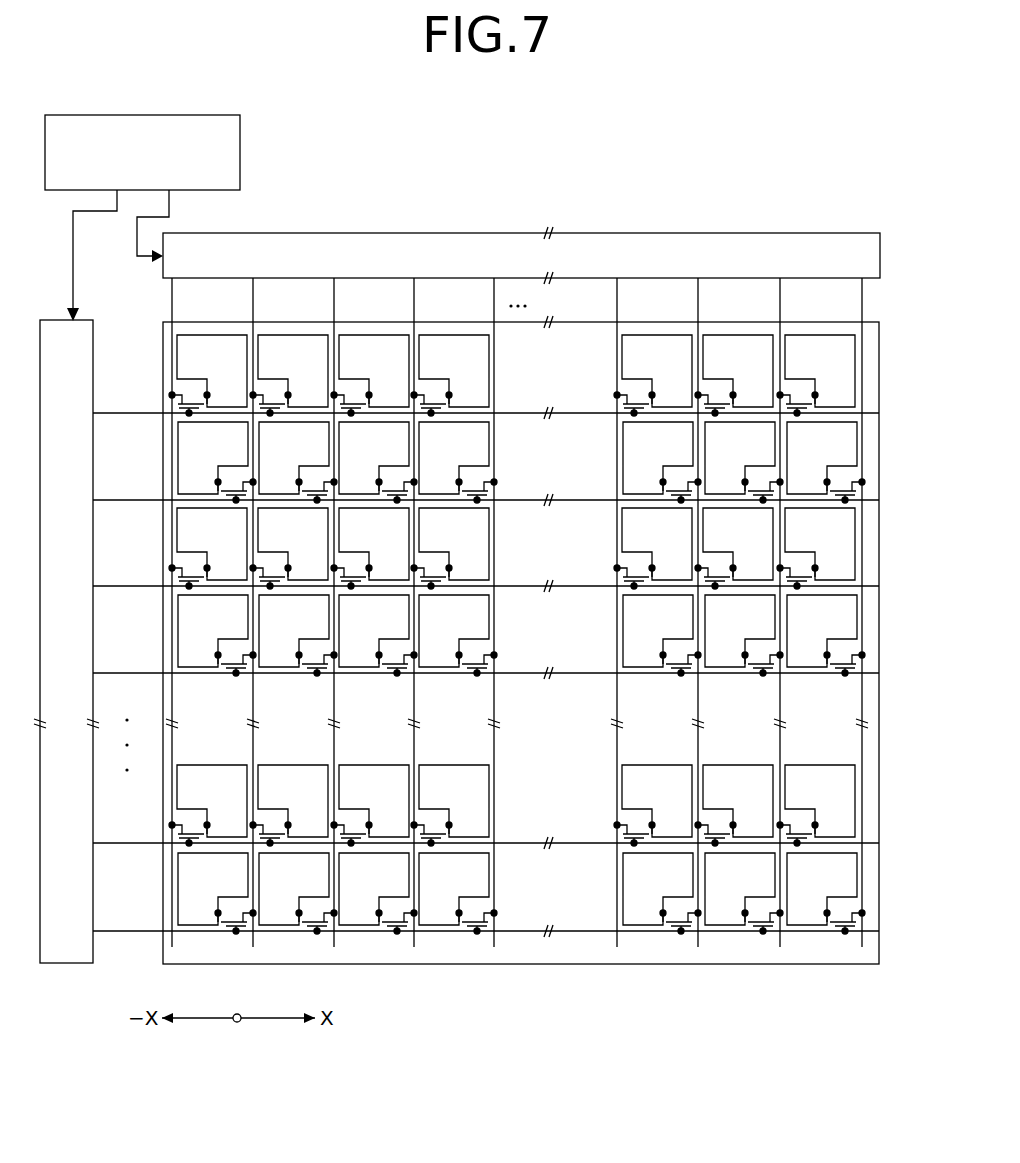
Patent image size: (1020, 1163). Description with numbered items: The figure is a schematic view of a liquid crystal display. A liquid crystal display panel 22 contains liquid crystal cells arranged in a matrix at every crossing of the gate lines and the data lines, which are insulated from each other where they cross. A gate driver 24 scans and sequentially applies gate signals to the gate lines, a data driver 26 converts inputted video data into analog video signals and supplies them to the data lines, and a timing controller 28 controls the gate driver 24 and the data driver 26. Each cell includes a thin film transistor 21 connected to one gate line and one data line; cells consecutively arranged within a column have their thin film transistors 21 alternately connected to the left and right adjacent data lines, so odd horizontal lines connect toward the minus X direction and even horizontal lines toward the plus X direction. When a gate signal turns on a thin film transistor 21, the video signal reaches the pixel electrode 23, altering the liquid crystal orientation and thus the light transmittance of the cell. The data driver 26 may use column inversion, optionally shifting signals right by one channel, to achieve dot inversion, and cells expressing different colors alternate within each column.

The timing controller 28 is at (240, 122).
The data driver 26 is at (612, 236).
The gate driver 24 is at (78, 957).
The liquid crystal display panel 22 is at (477, 595).
The pixel electrode 23 is at (185, 377).
The thin film transistor 21 is at (170, 405).